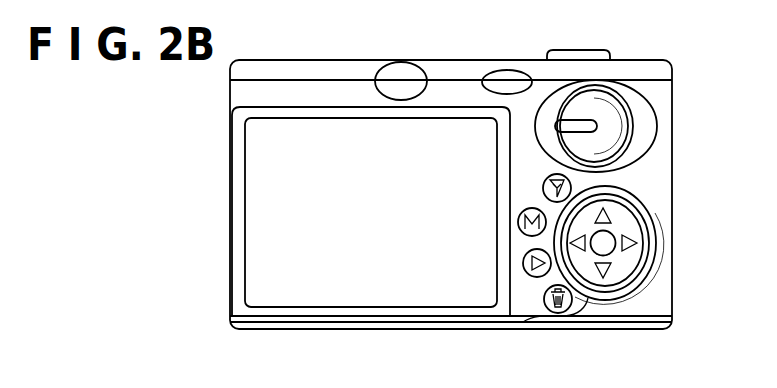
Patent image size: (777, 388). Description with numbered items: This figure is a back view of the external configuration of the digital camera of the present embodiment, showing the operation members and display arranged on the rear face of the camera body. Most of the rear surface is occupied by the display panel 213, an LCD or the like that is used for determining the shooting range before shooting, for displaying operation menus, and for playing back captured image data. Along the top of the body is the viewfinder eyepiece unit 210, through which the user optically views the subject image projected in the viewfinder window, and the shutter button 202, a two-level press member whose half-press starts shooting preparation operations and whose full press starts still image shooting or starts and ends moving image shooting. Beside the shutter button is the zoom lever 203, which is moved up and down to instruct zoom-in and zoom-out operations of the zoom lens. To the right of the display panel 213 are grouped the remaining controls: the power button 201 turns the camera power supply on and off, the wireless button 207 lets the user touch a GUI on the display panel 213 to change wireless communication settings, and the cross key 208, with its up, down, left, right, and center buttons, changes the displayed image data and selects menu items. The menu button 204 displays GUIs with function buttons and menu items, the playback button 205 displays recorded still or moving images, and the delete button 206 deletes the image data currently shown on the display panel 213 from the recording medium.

The power button 201 is at (528, 78).
The shutter button 202 is at (577, 50).
The zoom lever 203 is at (657, 126).
The menu button 204 is at (522, 232).
The playback button 205 is at (533, 277).
The delete button 206 is at (572, 300).
The wireless button 207 is at (572, 188).
The cross key 208 is at (657, 219).
The viewfinder eyepiece unit 210 is at (401, 75).
The display panel 213 is at (243, 193).